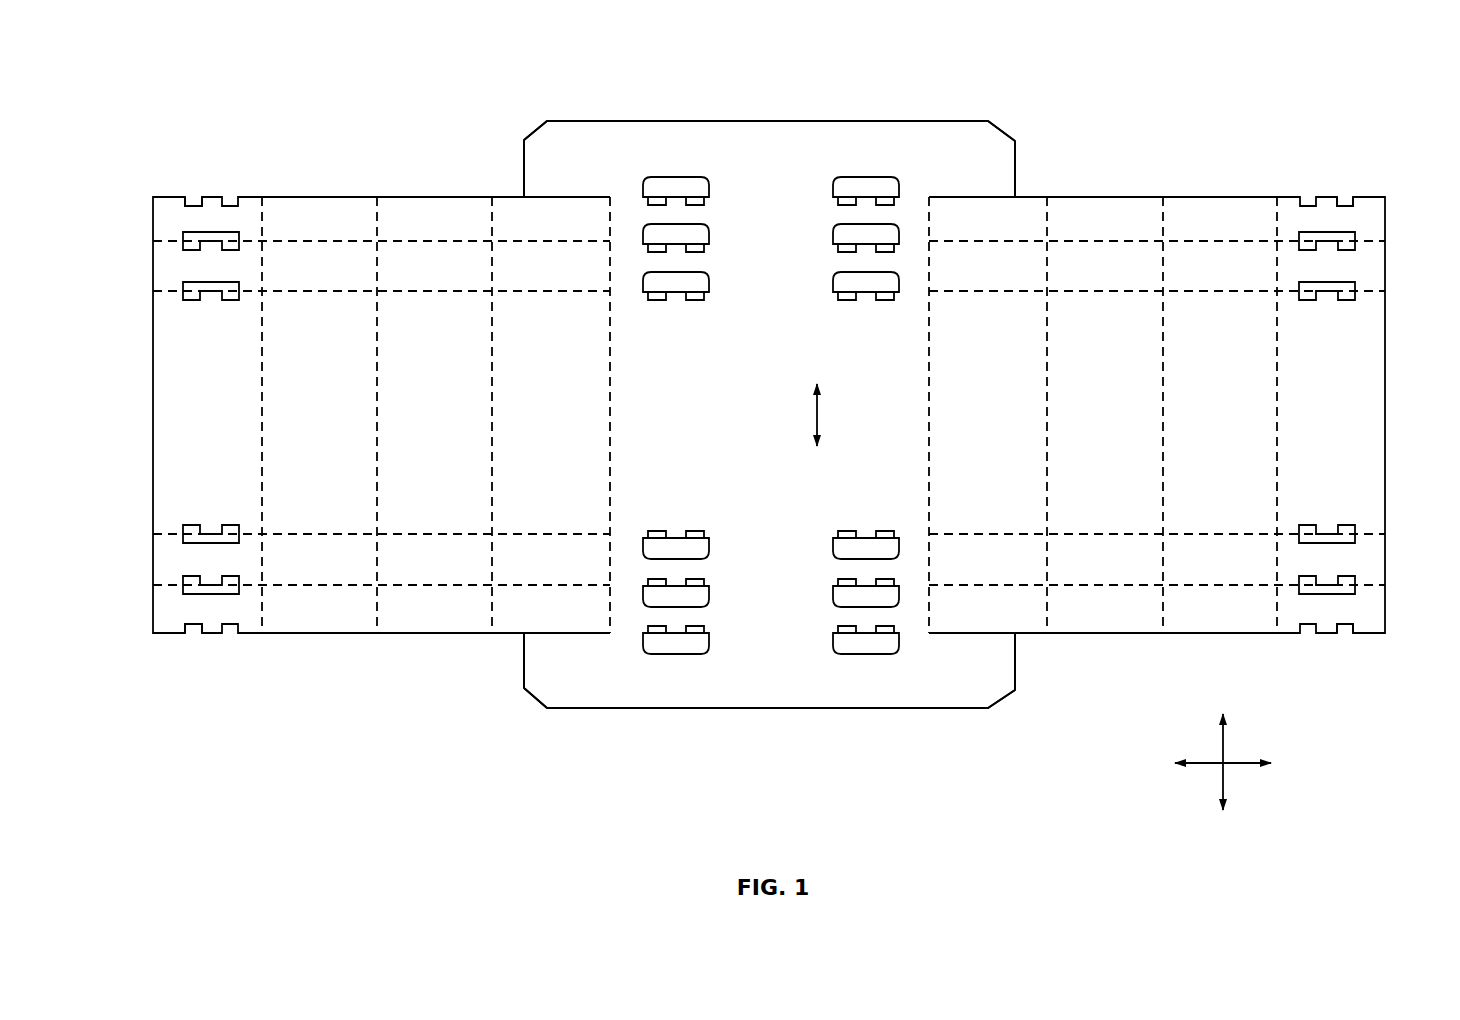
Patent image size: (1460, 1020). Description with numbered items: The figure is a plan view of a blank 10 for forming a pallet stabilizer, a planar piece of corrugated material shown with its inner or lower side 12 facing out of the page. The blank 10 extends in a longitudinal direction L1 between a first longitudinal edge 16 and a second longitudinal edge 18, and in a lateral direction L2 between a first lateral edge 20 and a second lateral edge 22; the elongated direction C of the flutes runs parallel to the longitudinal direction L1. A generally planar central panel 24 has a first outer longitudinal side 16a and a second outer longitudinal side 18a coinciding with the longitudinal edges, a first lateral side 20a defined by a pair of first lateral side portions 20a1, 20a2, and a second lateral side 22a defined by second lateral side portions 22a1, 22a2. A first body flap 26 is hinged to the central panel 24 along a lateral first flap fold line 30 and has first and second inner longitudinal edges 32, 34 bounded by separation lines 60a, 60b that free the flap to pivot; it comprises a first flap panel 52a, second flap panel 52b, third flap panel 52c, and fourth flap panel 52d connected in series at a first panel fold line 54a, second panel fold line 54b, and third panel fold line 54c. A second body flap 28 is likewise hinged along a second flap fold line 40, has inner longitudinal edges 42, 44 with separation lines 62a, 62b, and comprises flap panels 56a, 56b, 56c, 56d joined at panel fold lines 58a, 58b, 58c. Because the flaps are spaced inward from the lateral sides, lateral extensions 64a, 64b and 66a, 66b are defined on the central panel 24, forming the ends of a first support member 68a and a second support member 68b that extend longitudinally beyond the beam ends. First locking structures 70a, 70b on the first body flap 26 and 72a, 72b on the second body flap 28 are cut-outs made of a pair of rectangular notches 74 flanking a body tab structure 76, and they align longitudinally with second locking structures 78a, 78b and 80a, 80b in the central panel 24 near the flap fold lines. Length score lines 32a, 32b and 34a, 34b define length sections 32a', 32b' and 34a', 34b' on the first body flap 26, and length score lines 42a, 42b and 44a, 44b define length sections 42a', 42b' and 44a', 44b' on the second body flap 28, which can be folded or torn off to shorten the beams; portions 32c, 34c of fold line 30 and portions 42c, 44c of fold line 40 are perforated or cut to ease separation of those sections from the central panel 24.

The blank 10 is at (345, 72).
The inner or lower side 12 is at (767, 143).
The first longitudinal edge 16 is at (621, 710).
The first outer longitudinal side 16a is at (830, 708).
The second longitudinal edge 18 is at (603, 119).
The second outer longitudinal side 18a is at (830, 121).
The first lateral edge 20 is at (151, 489).
The first lateral side 20a is at (522, 148).
The first lateral side portion 20a1 is at (522, 177).
The first lateral side portion 20a2 is at (522, 668).
The second lateral edge 22 is at (1388, 458).
The second lateral side 22a is at (1017, 148).
The second lateral side portion 22a1 is at (1017, 177).
The second lateral side portion 22a2 is at (1017, 668).
The central panel 24 is at (753, 432).
The first body flap 26 is at (339, 636).
The second body flap 28 is at (1146, 636).
The first flap fold line 30 is at (611, 432).
The first inner longitudinal edge 32 is at (418, 634).
The length score line 32a is at (381, 563).
The length section 32a' is at (440, 610).
The length score line 32b is at (381, 512).
The length section 32b' is at (440, 562).
The portion of lateral flap fold line 32c is at (612, 556).
The second inner longitudinal edge 34 is at (418, 197).
The length score line 34a is at (381, 265).
The length section 34a' is at (440, 221).
The length score line 34b is at (381, 318).
The length section 34b' is at (440, 268).
The portion of lateral flap fold line 34c is at (612, 278).
The second flap fold line 40 is at (929, 372).
The first inner longitudinal edge 42 is at (1215, 634).
The length score line 42a is at (1157, 563).
The length section 42a' is at (1108, 610).
The length score line 42b is at (1157, 512).
The length section 42b' is at (1108, 562).
The portion of lateral flap fold line 42c is at (928, 556).
The second inner longitudinal edge 44 is at (1218, 197).
The length score line 44a is at (1157, 265).
The length section 44a' is at (1108, 221).
The length score line 44b is at (1157, 314).
The length section 44b' is at (1108, 268).
The portion of lateral flap fold line 44c is at (928, 278).
The first flap panel 52a is at (532, 420).
The second flap panel 52b is at (417, 420).
The third flap panel 52c is at (302, 420).
The fourth flap panel 52d is at (186, 420).
The first panel fold line 54a is at (493, 432).
The second panel fold line 54b is at (378, 432).
The third panel fold line 54c is at (263, 432).
The first flap panel 56a is at (964, 420).
The second flap panel 56b is at (1087, 420).
The third flap panel 56c is at (1201, 420).
The fourth flap panel 56d is at (1314, 420).
The first panel fold line 58a is at (1046, 444).
The second panel fold line 58b is at (1162, 478).
The third panel fold line 58c is at (1276, 478).
The separation line 60a is at (538, 634).
The separation line 60b is at (543, 196).
The separation line 62a is at (970, 634).
The separation line 62b is at (992, 196).
The lateral extension 64a is at (595, 668).
The lateral extension 64b is at (593, 168).
The lateral extension 66a is at (943, 668).
The lateral extension 66b is at (948, 173).
The first support member 68a is at (710, 710).
The second support member 68b is at (728, 156).
The first locking structure 70a is at (241, 619).
The first locking structure 70b is at (241, 209).
The first locking structure 72a is at (1297, 619).
The first locking structure 72b is at (1297, 209).
The rectangular notch 74 is at (178, 197).
The body tab structure 76 is at (193, 197).
The second locking structure 78a is at (715, 636).
The second locking structure 78b is at (715, 204).
The second locking structure 80a is at (828, 552).
The second locking structure 80b is at (828, 277).
The elongated direction of the flutes C is at (820, 412).
The longitudinal direction L1 is at (1228, 775).
The lateral direction L2 is at (1204, 765).